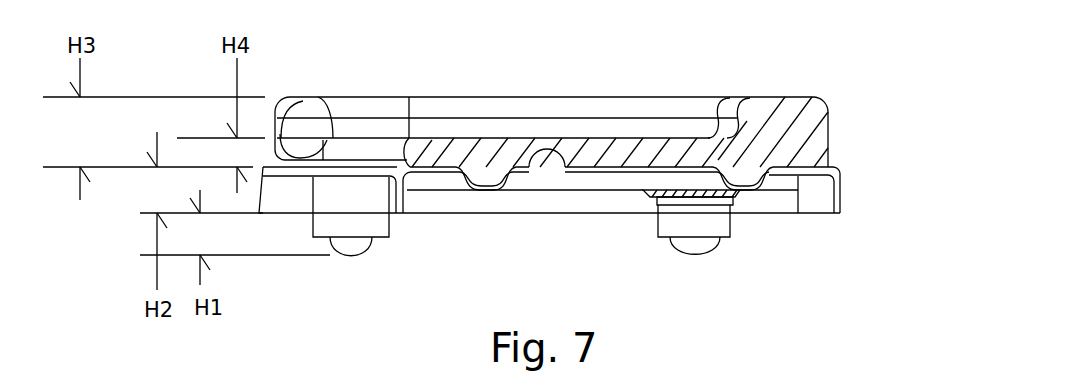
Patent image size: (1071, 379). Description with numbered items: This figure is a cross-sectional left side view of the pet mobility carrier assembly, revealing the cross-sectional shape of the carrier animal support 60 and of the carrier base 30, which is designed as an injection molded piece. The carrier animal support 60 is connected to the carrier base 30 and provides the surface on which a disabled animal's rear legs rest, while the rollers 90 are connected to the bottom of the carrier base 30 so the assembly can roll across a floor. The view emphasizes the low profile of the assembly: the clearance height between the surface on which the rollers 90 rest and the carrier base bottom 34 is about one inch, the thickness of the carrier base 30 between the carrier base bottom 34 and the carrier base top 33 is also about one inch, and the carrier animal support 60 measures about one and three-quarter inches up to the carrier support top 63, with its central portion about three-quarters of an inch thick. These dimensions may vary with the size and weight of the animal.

The carrier base 30 is at (842, 206).
The carrier base top 33 is at (525, 160).
The carrier base bottom 34 is at (445, 213).
The carrier animal support 60 is at (832, 146).
The carrier support top 63 is at (768, 97).
The rollers 90 is at (728, 238).